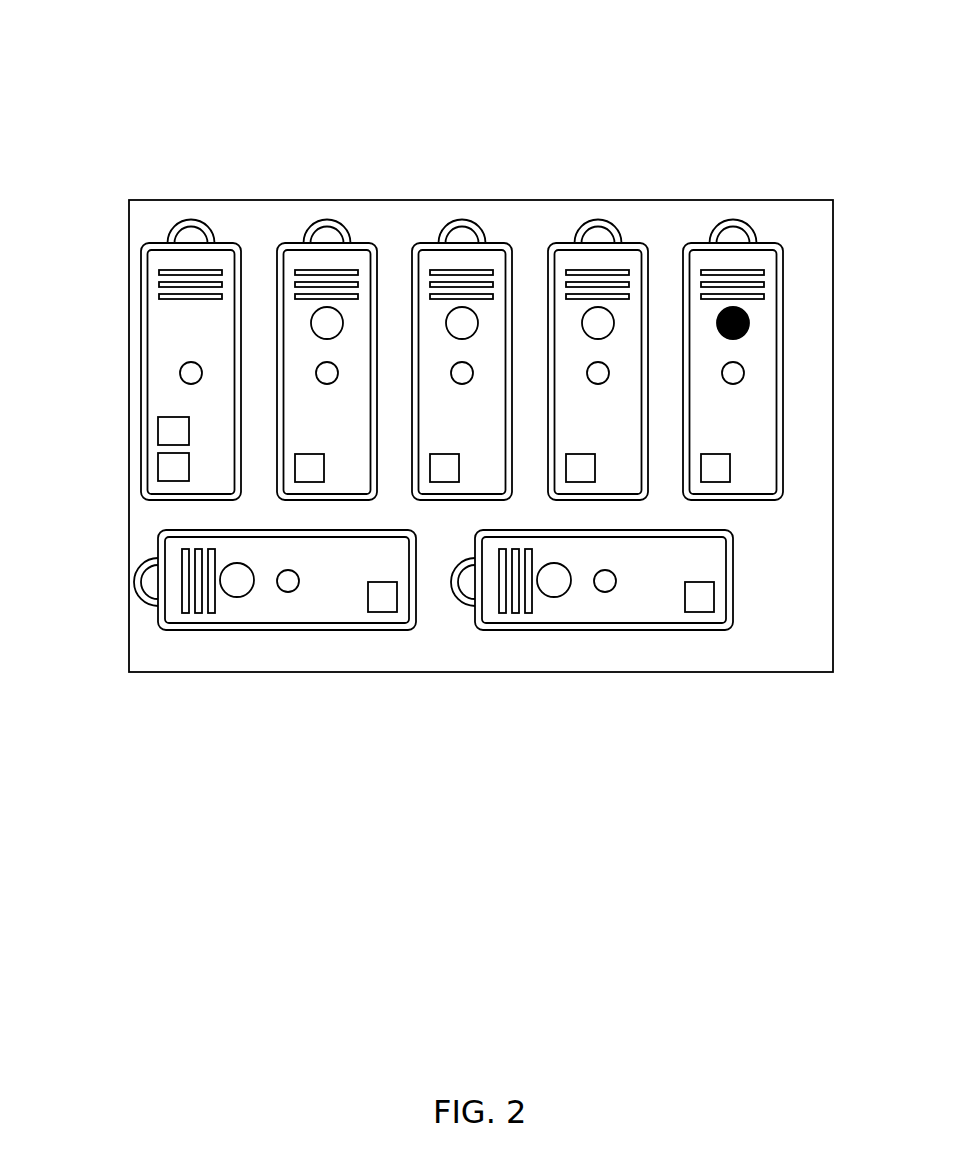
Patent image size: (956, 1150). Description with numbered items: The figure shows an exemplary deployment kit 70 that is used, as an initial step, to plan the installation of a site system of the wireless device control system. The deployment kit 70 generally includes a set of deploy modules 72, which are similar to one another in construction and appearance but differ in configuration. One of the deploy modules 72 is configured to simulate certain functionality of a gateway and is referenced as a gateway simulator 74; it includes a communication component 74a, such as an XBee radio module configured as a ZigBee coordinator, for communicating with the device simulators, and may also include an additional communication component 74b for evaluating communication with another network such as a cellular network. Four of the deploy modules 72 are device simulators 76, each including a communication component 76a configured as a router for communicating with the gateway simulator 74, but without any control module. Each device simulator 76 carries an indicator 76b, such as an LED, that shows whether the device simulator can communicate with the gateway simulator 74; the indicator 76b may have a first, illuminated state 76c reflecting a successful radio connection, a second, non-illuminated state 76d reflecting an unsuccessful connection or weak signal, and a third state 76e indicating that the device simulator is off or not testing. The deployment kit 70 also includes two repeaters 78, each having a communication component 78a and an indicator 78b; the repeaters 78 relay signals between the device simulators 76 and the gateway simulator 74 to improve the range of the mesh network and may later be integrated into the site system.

The deployment kit 70 is at (552, 82).
The deploy modules 72 is at (227, 243).
The gateway simulator 74 is at (129, 322).
The communication component 74a is at (158, 432).
The additional communication component 74b is at (158, 467).
The device simulators 76 is at (550, 323).
The communication component 76a is at (324, 454).
The indicator 76b is at (566, 323).
The first state of indicator 76c is at (756, 330).
The second state of indicator 76d is at (616, 329).
The third state of indicator 76e is at (443, 329).
The repeaters 78 is at (486, 660).
The communication component 78a is at (383, 612).
The indicator 78b is at (237, 597).